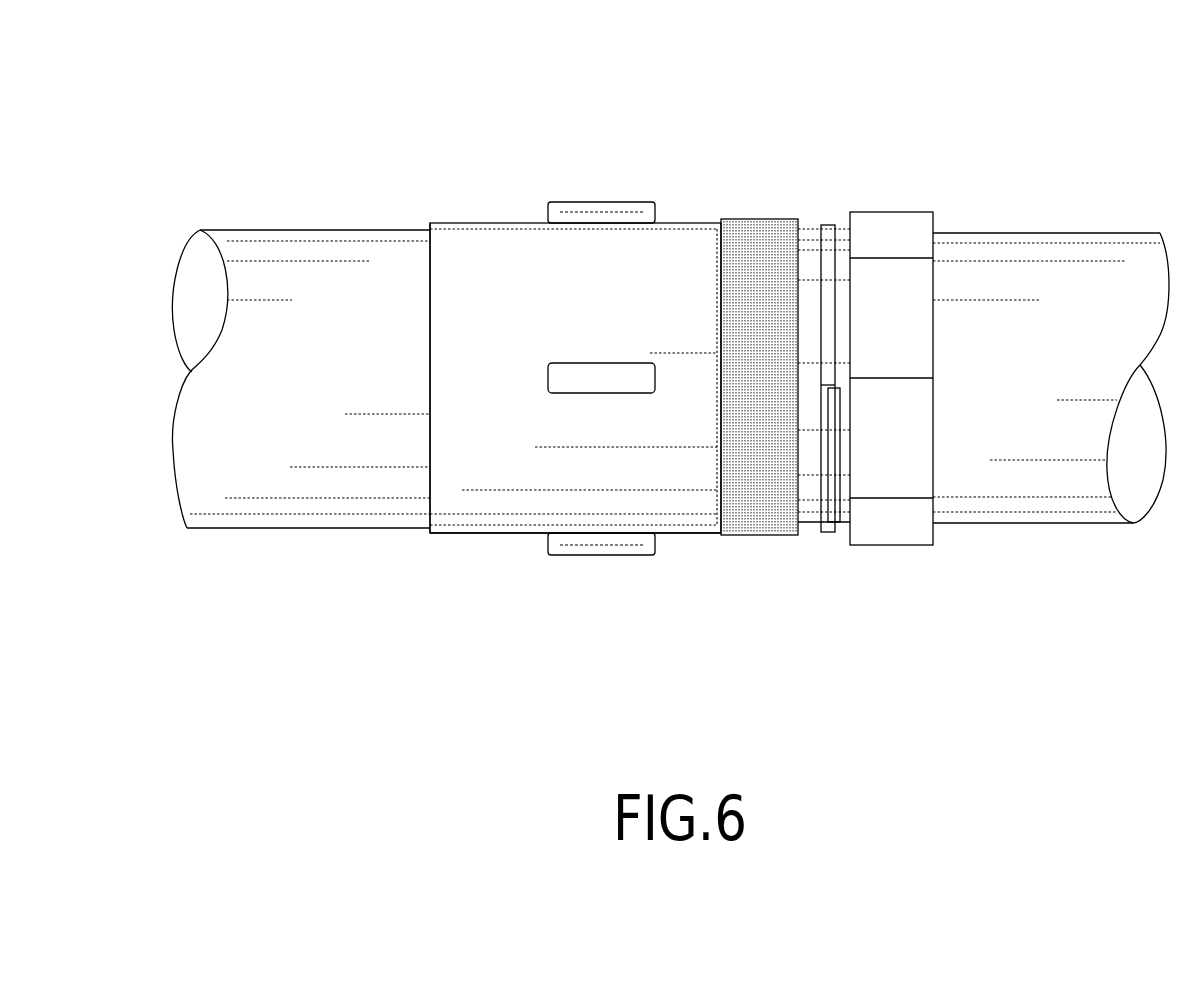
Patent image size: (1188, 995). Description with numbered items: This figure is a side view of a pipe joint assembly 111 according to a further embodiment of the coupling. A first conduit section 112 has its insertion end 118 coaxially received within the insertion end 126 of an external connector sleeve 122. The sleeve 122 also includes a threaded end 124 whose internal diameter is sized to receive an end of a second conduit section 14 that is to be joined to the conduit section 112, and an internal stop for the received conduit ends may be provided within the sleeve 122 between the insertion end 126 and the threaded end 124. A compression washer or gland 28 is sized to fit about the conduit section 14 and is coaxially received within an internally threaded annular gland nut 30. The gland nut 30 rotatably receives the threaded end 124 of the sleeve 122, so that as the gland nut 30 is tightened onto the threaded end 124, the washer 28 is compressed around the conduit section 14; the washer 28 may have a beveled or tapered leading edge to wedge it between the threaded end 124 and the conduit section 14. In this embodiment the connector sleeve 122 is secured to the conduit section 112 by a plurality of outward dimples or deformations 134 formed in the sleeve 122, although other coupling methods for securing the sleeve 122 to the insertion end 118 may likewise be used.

The pipe joint assembly 111 is at (835, 163).
The conduit section 112 is at (244, 528).
The insertion end 118 is at (495, 535).
The insertion end 126 is at (442, 222).
The external sleeve 122 is at (678, 542).
The outward dimples or deformations 134 is at (565, 203).
The threaded end 124 is at (748, 219).
The compression washer or gland 28 is at (830, 535).
The gland nut 30 is at (918, 548).
The conduit section 14 is at (1058, 527).